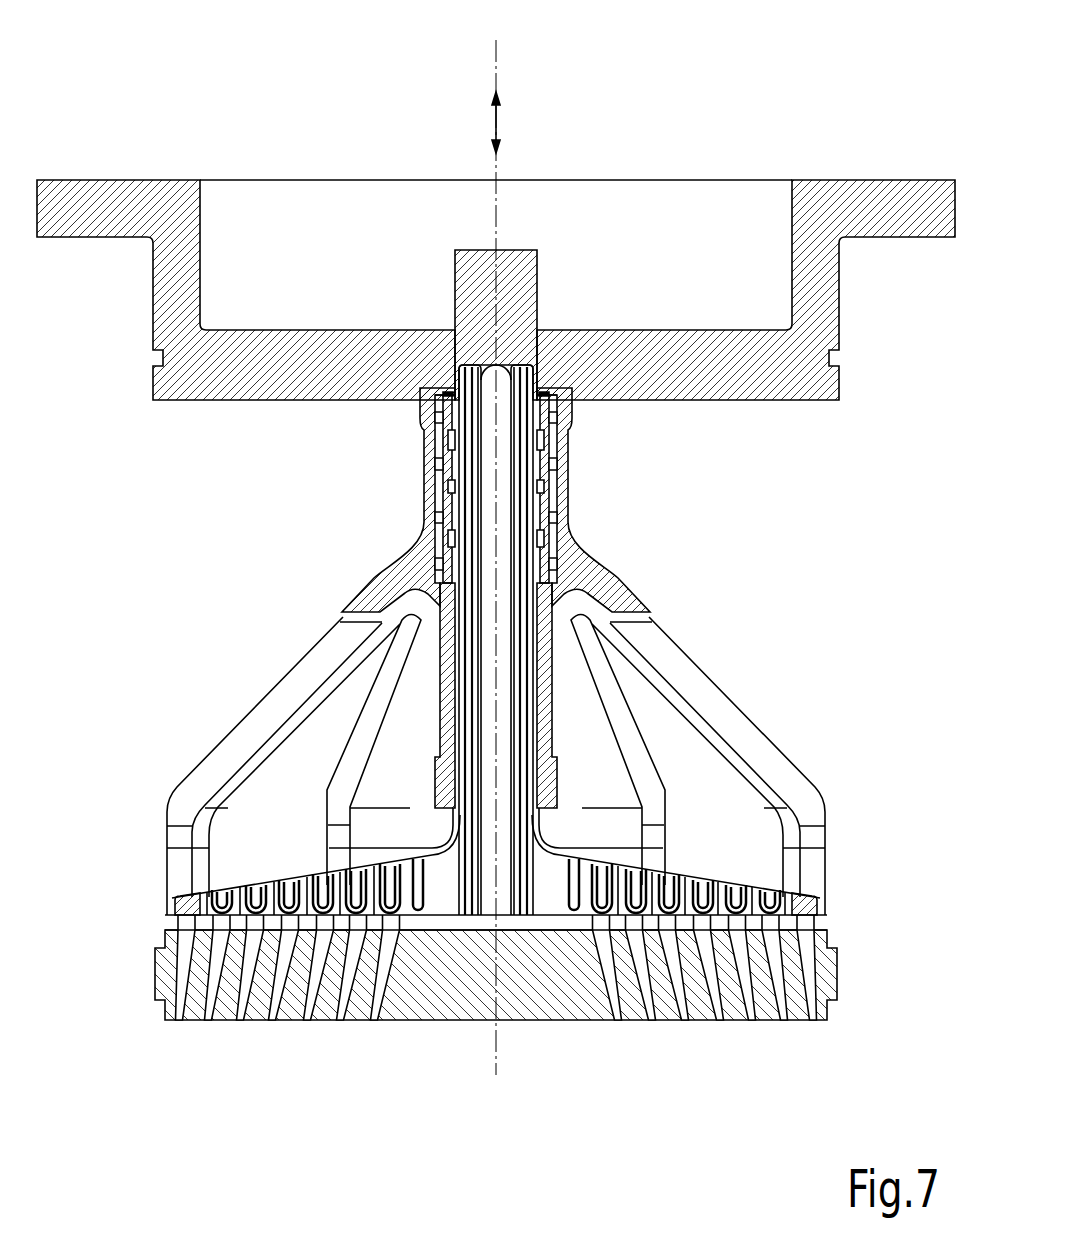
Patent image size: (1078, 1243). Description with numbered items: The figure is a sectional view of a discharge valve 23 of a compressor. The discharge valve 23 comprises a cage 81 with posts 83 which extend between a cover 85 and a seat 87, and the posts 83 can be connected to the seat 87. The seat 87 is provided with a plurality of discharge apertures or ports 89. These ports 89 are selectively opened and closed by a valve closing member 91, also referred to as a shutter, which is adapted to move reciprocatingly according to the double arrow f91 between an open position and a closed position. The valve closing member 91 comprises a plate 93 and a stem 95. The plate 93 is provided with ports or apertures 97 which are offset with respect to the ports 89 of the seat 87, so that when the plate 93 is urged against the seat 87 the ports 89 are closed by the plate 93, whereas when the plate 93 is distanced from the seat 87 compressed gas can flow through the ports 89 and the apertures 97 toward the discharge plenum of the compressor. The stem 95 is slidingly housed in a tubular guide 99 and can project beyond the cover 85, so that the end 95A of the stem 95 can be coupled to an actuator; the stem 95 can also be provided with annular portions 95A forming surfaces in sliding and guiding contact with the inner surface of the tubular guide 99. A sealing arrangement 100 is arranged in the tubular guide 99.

The discharge valve 23 is at (850, 622).
The cage 81 is at (688, 650).
The posts 83 is at (262, 702).
The cover 85 is at (694, 402).
The seat 87 is at (165, 985).
The discharge apertures or ports 89 is at (322, 1007).
The valve closing member 91 is at (440, 841).
The plate 93 is at (190, 906).
The stem 95 is at (543, 290).
The end of the stem / annular portions 95A is at (470, 262).
The ports or apertures 97 is at (277, 880).
The tubular guide 99 is at (560, 482).
The sealing arrangement 100 is at (432, 480).
The double arrow f91 is at (497, 118).